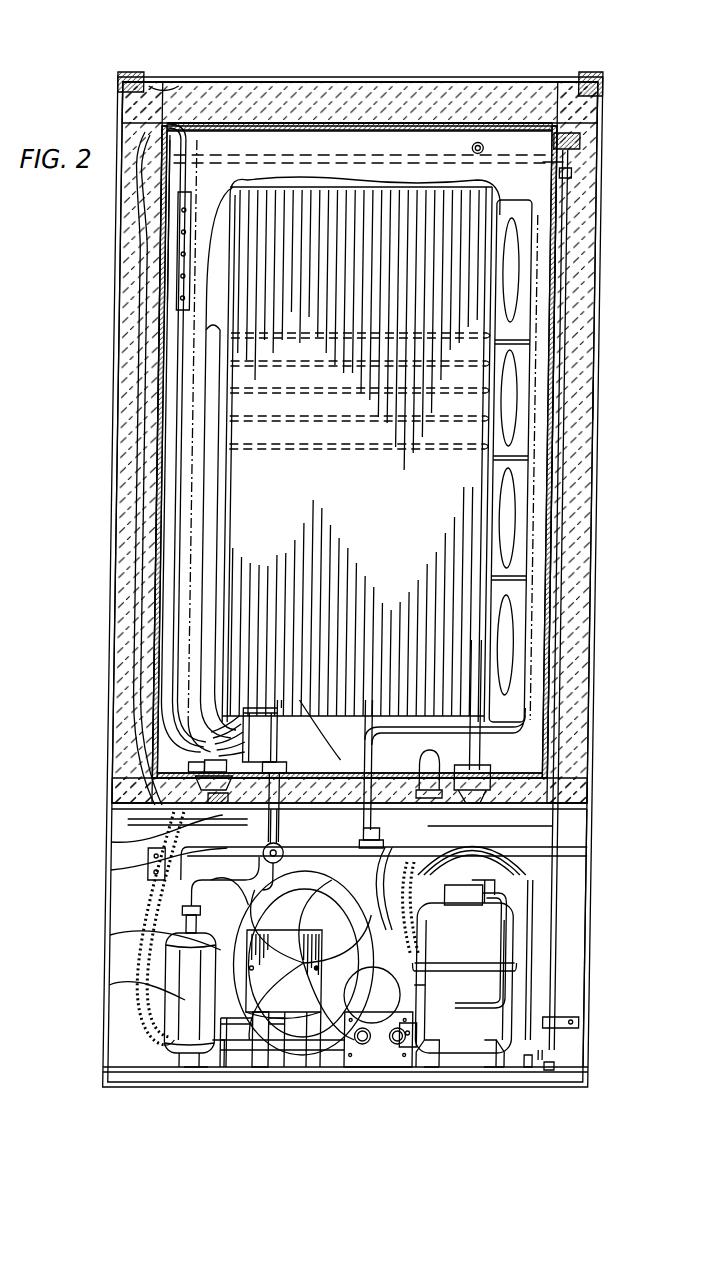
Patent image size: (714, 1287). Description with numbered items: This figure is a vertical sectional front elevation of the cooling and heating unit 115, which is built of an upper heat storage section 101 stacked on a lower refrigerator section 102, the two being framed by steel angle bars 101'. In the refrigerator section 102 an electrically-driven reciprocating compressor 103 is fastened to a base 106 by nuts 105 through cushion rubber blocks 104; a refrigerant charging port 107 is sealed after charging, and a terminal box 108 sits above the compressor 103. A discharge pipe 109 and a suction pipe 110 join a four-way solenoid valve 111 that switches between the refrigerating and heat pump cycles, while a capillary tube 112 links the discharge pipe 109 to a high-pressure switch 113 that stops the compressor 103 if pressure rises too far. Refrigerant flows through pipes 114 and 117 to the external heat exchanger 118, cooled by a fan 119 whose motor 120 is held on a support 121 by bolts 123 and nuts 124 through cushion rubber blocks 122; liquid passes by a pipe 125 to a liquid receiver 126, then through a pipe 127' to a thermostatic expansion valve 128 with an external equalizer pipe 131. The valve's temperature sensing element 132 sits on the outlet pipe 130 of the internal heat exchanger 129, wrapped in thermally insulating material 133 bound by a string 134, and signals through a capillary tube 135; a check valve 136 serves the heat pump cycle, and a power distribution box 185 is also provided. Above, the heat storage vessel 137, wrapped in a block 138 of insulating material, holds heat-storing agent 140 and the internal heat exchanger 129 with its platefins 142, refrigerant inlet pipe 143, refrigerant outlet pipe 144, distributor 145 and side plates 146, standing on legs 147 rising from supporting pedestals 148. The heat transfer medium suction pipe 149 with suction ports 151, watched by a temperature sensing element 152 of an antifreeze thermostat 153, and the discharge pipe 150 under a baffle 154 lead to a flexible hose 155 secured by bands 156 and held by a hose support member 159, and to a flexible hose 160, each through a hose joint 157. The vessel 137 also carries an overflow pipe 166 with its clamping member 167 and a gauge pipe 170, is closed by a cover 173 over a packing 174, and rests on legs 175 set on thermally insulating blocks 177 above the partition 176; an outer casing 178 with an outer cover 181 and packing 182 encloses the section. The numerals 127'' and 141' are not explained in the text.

The heat storage section 101 is at (375, 582).
The angle bars 101' is at (355, 572).
The refrigerator section 102 is at (645, 963).
The electrically-driven reciprocating compressor 103 is at (536, 1040).
The cushion rubber blocks 104 is at (512, 1062).
The nuts 105 is at (528, 1062).
The base 106 is at (562, 1054).
The refrigerant charging port 107 is at (520, 893).
The terminal box 108 is at (476, 900).
The discharge pipe 109 is at (522, 920).
The suction pipe 110 is at (532, 870).
The four-way solenoid valve 111 is at (508, 834).
The capillary tube 112 is at (390, 908).
The high-pressure switch 113 is at (428, 1010).
The pipe 114 is at (540, 850).
The cooling and heating unit 115 is at (128, 414).
The pipe 117 is at (376, 888).
The external heat exchanger 118 is at (160, 857).
The fan 119 is at (226, 971).
The motor 120 is at (306, 933).
The support 121 is at (276, 1010).
The cushion rubber blocks 122 is at (360, 1020).
The bolts 123 is at (284, 971).
The nuts 124 is at (276, 1065).
The pipe 125 is at (157, 928).
The liquid receiver 126 is at (184, 1018).
The pipe 127' is at (207, 1079).
The cable 127'' is at (139, 926).
The thermostatic expansion valve 128 is at (240, 830).
The internal heat exchanger 129 is at (240, 527).
The outlet pipe 130 is at (382, 740).
The external equalizer pipe 131 is at (292, 790).
The temperature sensing element 132 is at (432, 832).
The thermally insulating material 133 is at (348, 790).
The string 134 is at (346, 831).
The capillary tube 135 is at (266, 935).
The check valve 136 is at (248, 856).
The heat storage vessel 137 is at (146, 382).
The block of thermally insulating material 138 is at (185, 272).
The heat-storing agent 140 is at (236, 155).
The refrigerant tube 141' is at (359, 404).
The platefins 142 is at (356, 420).
The refrigerant inlet pipe 143 is at (269, 706).
The refrigerant outlet pipe 144 is at (532, 360).
The distributor 145 is at (236, 665).
The side plates 146 is at (228, 503).
The legs 147 is at (216, 669).
The supporting pedestals 148 is at (228, 692).
The heat transfer medium suction pipe 149 is at (165, 349).
The heat transfer medium discharge pipe 150 is at (442, 790).
The heat transfer medium suction ports 151 is at (180, 302).
The temperature sensing element 152 is at (183, 240).
The antifreeze thermostat 153 is at (165, 882).
The baffle 154 is at (441, 745).
The flexible hose 155 is at (170, 987).
The bands 156 is at (126, 822).
The hose joint 157 is at (402, 1070).
The hose support member 159 is at (306, 1065).
The flexible hose 160 is at (428, 986).
The overflow pipe 166 is at (572, 210).
The clamping member 167 is at (574, 174).
The pipe 170 is at (480, 140).
The cover 173 is at (336, 124).
The packing 174 is at (580, 142).
The legs 175 is at (212, 720).
The partition 176 is at (200, 772).
The thermally insulating blocks 177 is at (205, 744).
The outer casing 178 is at (601, 400).
The outer cover 181 is at (292, 124).
The packing 182 is at (166, 84).
The power distribution box 185 is at (358, 950).